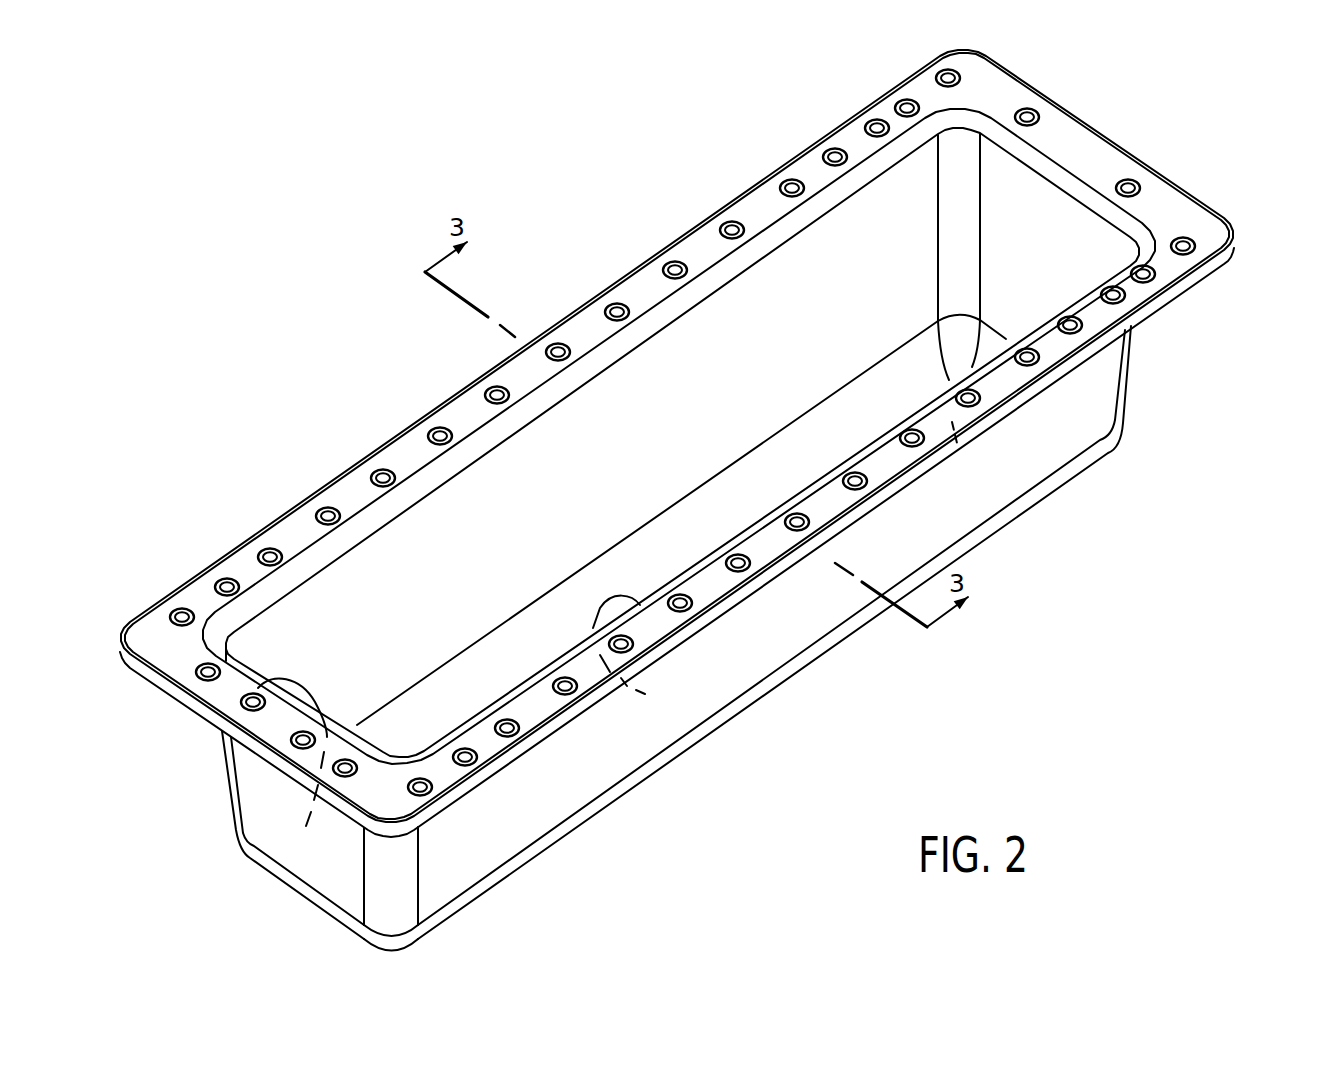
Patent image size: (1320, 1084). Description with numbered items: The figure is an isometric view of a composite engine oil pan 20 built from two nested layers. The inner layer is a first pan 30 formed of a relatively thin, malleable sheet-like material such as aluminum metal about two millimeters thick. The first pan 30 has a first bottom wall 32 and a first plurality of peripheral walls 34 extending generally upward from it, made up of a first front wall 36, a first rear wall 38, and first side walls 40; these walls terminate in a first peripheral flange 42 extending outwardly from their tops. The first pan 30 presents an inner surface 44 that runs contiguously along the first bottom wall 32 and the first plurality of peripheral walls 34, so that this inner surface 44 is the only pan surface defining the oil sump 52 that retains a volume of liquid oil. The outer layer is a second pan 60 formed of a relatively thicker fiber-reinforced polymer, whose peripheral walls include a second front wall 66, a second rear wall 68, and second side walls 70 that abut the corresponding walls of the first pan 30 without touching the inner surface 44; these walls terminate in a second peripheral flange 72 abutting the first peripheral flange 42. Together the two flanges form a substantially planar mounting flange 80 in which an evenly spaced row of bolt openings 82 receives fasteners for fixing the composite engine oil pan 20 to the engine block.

The composite engine oil pan 20 is at (268, 318).
The first pan 30 is at (701, 387).
The first bottom wall 32 is at (443, 697).
The first plurality of peripheral walls 34 is at (701, 387).
The first front wall 36 is at (258, 688).
The first rear wall 38 is at (1080, 247).
The first side walls 40 is at (492, 505).
The first peripheral flange 42 is at (990, 383).
The inner surface 44 is at (740, 340).
The oil sump 52 is at (643, 453).
The second pan 60 is at (1128, 390).
The second front wall 66 is at (323, 863).
The second rear wall 68 is at (1043, 220).
The second side walls 70 is at (748, 645).
The second peripheral flange 72 is at (952, 418).
The mounting flange 80 is at (1180, 305).
The bolt openings 82 is at (868, 122).